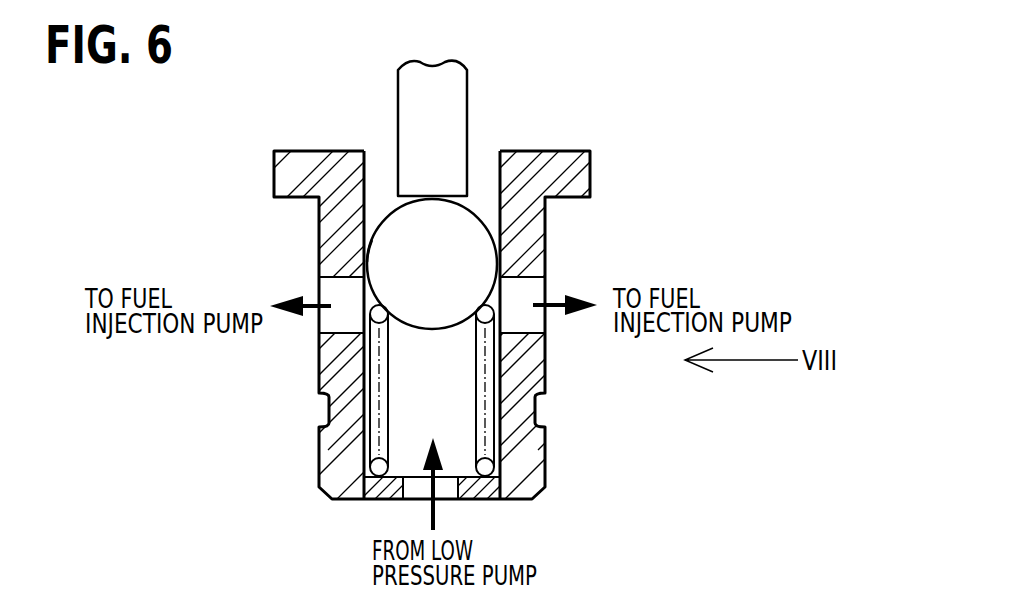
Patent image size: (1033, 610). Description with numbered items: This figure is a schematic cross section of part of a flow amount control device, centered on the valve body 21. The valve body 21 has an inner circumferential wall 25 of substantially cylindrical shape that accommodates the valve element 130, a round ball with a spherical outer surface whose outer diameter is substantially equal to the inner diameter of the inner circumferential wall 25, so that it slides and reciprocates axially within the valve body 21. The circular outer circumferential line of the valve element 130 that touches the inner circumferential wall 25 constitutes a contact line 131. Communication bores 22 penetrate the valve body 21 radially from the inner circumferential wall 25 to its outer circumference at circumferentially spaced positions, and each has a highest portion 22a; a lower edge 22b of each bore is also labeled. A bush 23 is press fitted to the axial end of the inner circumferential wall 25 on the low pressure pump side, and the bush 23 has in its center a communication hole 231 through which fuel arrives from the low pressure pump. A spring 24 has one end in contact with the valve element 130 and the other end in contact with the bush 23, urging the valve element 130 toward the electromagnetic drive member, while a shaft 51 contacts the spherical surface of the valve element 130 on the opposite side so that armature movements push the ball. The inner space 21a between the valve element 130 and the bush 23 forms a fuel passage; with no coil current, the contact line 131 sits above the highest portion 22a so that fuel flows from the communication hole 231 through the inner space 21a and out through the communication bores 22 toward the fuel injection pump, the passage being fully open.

The valve body 21 is at (318, 234).
The inner space 21a is at (420, 396).
The communication bores 22 is at (342, 322).
The highest portion of communication bore 22a is at (520, 287).
The lower edge of outlet port 22b is at (508, 323).
The bush 23 is at (377, 500).
The communication hole 231 is at (448, 493).
The spring 24 is at (496, 439).
The inner circumferential wall 25 is at (368, 173).
The shaft 51 is at (450, 102).
The valve element 130 is at (455, 245).
The contact line 131 is at (366, 262).